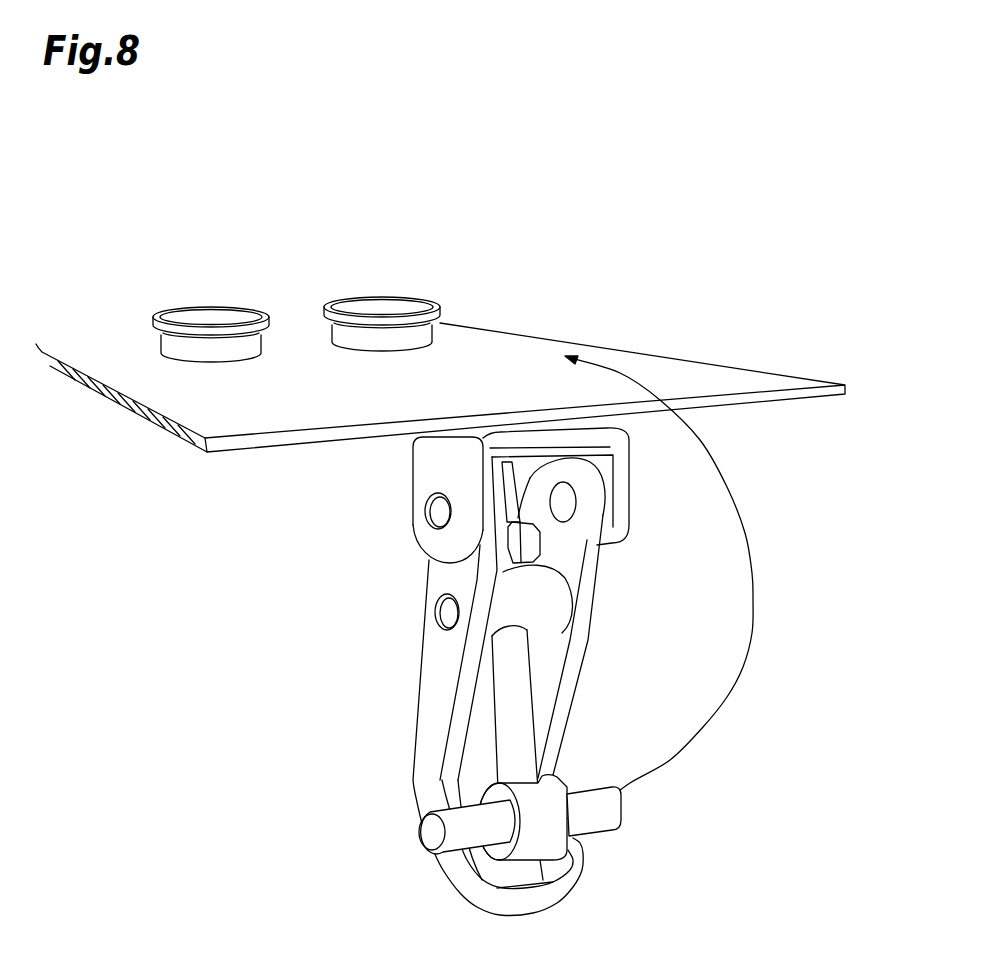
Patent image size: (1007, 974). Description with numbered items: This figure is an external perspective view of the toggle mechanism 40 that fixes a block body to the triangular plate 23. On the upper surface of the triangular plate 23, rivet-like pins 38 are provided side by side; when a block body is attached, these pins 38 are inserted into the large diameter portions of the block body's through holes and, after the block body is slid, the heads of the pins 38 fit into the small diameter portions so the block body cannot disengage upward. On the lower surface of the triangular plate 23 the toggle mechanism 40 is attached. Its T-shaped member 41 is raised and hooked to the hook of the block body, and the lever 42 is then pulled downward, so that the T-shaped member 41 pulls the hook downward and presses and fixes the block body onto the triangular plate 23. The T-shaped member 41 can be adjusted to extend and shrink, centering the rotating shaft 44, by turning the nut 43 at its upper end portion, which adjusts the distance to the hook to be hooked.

The triangular plate 23 is at (472, 360).
The pins 38 is at (383, 307).
The toggle mechanism 40 is at (385, 708).
The T-shaped member 41 is at (605, 819).
The lever 42 is at (452, 886).
The nut 43 is at (540, 542).
The rotating shaft 44 is at (443, 611).